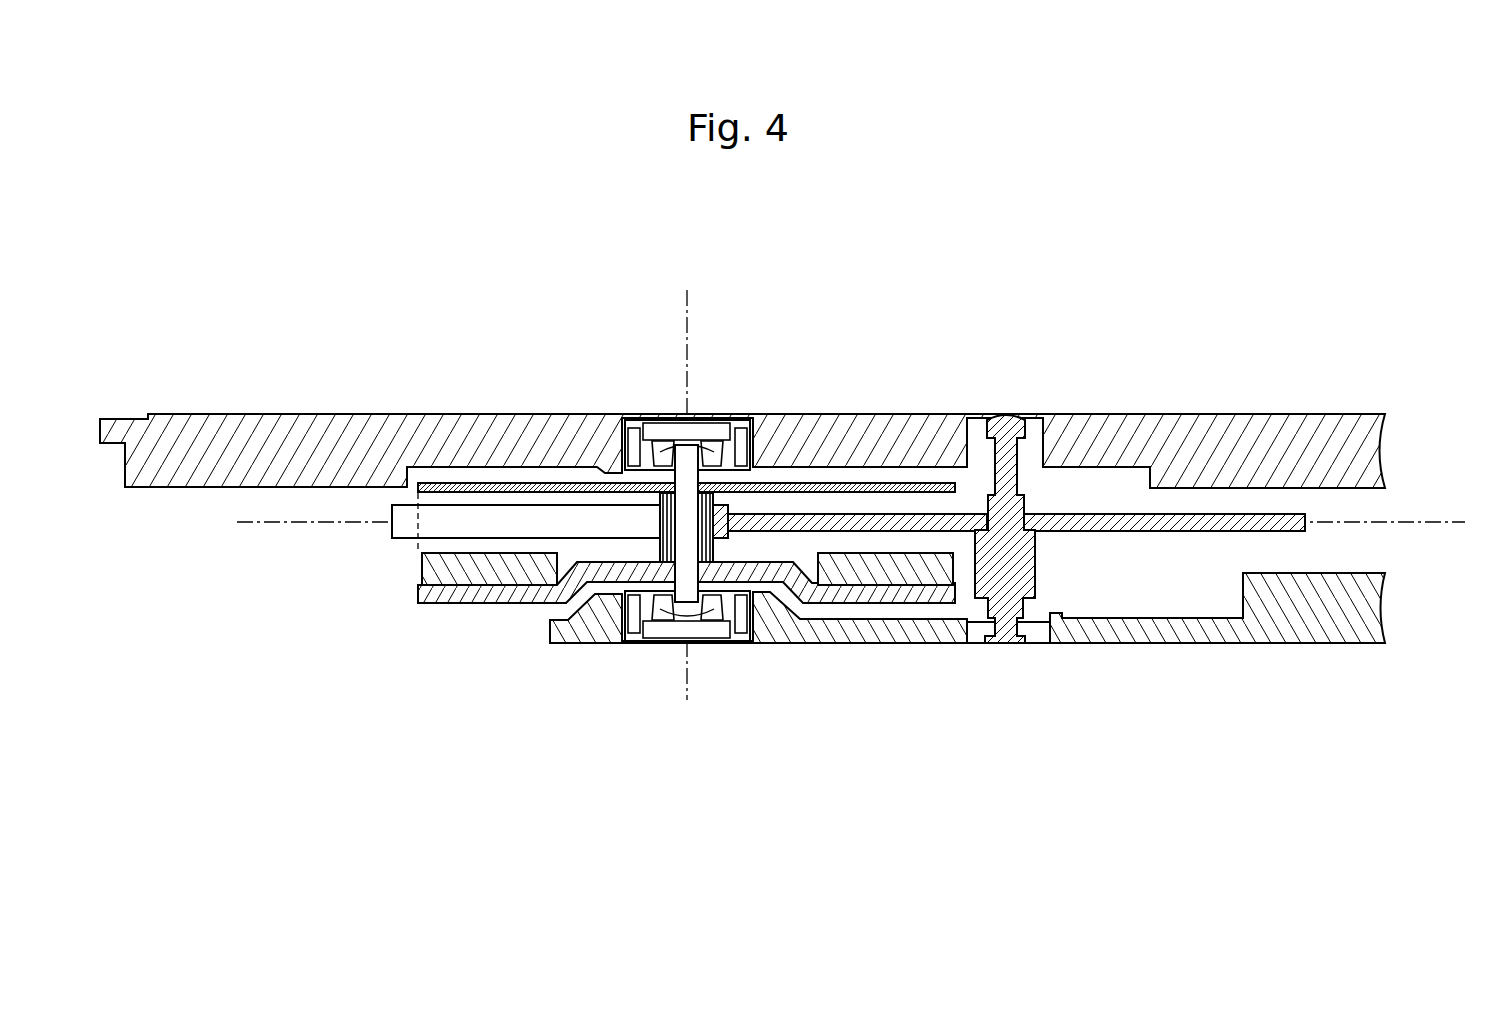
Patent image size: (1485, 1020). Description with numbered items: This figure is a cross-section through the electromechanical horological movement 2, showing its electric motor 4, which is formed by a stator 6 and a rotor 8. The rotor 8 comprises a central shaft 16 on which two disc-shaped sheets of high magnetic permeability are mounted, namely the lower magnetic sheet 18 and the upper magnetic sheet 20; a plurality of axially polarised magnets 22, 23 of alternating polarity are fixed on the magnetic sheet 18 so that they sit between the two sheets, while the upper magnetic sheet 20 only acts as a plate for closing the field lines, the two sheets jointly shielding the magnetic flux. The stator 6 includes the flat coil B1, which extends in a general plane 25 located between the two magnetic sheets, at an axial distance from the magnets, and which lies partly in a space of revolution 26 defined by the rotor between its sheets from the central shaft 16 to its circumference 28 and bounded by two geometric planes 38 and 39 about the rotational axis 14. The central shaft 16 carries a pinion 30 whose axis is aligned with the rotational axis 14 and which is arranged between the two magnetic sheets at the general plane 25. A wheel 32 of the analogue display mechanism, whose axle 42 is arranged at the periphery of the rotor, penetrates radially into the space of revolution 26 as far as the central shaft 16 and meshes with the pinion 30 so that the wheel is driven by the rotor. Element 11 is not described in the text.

The horological movement 2 is at (1160, 680).
The electric motor 4 is at (383, 567).
The stator 6 is at (398, 543).
The rotor 8 is at (460, 609).
The input shaft 11 is at (550, 522).
The rotational axis 14 is at (687, 327).
The central shaft 16 is at (692, 585).
The magnetic sheet 18 is at (826, 628).
The upper magnetic sheet 20 is at (686, 437).
The magnets 22 is at (497, 570).
The magnets 23 is at (905, 572).
The general plane 25 is at (270, 522).
The space of revolution 26 is at (565, 547).
The circumference 28 is at (418, 550).
The pinion 30 is at (655, 547).
The wheel 32 is at (1118, 520).
The geometric plane 38 is at (800, 555).
The geometric plane 39 is at (910, 495).
The axle 42 is at (1037, 565).
The flat coil B1 is at (404, 513).